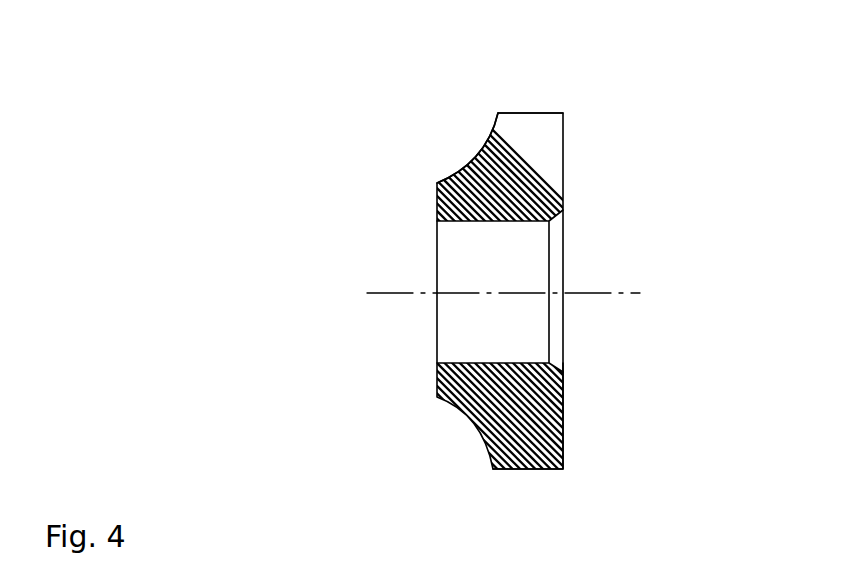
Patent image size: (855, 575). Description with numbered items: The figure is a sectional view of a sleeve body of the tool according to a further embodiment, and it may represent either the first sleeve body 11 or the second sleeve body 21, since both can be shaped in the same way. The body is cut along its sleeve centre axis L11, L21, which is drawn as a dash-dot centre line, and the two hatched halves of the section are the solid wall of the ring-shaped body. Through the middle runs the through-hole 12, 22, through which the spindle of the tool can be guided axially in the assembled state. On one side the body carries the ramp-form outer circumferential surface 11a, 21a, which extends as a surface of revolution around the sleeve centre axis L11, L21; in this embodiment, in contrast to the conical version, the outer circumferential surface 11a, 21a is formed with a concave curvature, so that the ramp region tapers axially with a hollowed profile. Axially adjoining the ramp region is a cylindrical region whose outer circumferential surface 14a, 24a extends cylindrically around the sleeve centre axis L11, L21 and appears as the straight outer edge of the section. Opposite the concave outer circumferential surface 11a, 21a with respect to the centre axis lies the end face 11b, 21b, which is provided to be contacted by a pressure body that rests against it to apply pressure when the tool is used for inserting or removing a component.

The first sleeve body 11 is at (451, 250).
The second sleeve body 21 is at (608, 80).
The first ramp-form outer circumferential surface 11a is at (441, 134).
The second ramp-form outer circumferential surface 21a is at (444, 177).
The first end face 11b is at (620, 416).
The second end face 21b is at (579, 431).
The outer circumferential surface of the cylindrical region 14a is at (512, 67).
The outer circumferential surface of the cylindrical region 24a is at (547, 100).
The through-hole 12 is at (431, 294).
The through-hole 22 is at (477, 363).
The first sleeve centre axis L11 is at (554, 320).
The second sleeve centre axis L21 is at (627, 294).